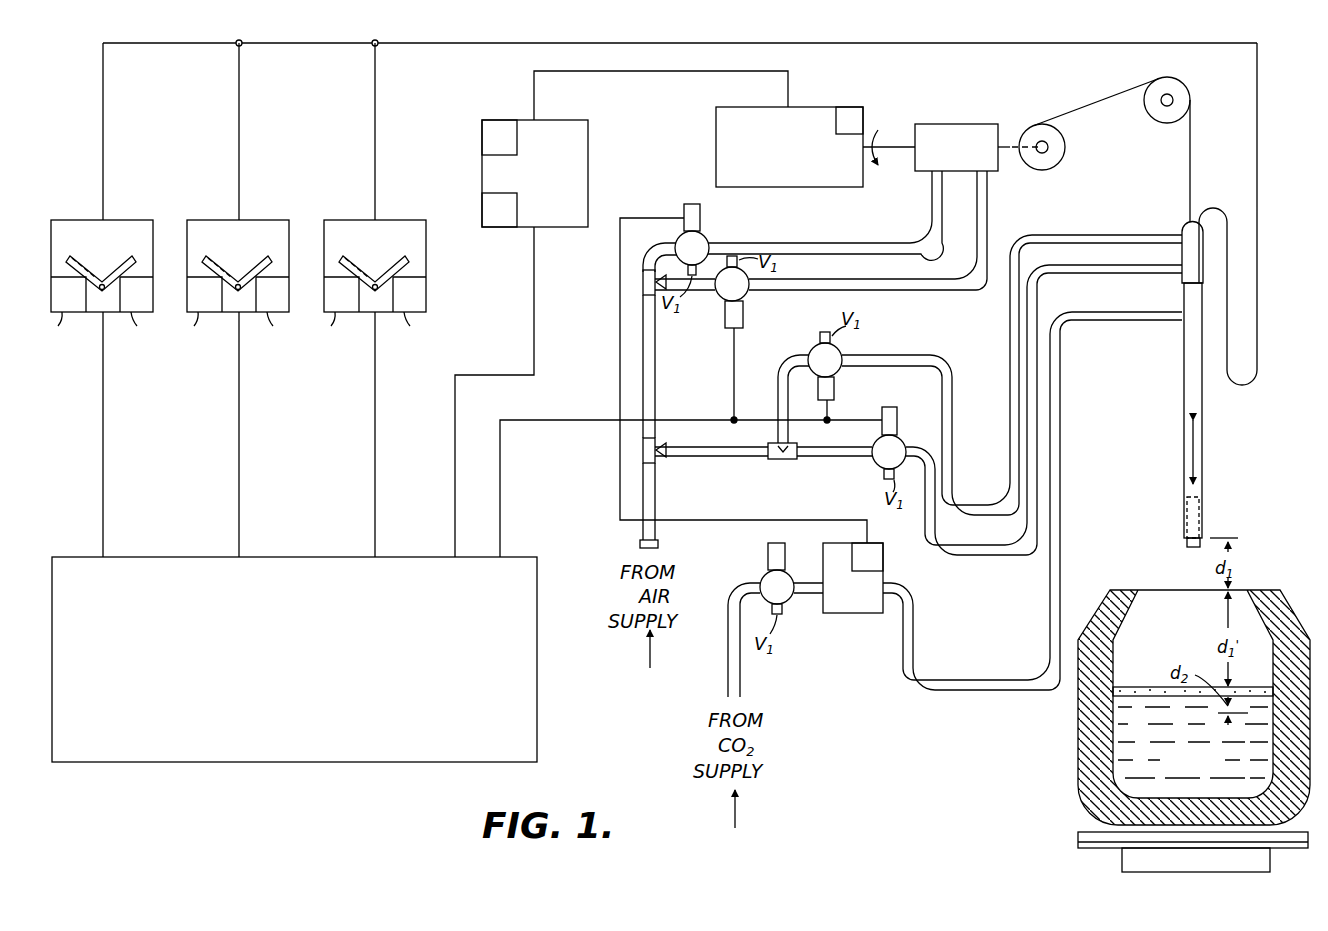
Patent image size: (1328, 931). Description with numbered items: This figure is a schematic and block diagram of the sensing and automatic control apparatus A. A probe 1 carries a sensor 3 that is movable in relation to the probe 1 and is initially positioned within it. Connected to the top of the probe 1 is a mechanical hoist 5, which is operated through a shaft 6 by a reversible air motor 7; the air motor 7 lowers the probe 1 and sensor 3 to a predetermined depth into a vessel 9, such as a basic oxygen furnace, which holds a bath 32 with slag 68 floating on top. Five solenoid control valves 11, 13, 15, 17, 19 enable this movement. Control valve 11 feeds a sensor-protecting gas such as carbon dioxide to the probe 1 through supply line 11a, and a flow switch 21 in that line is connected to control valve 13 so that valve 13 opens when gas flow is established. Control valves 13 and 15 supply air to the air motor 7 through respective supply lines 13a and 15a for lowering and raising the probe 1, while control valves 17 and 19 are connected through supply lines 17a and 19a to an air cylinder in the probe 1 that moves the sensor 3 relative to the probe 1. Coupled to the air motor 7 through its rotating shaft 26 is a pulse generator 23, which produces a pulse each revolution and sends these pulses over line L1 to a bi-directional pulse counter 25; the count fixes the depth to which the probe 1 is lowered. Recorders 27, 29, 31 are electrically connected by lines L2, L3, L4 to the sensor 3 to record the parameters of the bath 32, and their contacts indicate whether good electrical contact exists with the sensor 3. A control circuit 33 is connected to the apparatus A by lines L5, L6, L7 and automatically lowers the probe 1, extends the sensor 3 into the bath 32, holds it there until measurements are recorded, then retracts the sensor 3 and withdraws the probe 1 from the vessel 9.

The probe 1 is at (1209, 448).
The sensor 3 is at (1183, 544).
The mechanical hoist 5 is at (1100, 102).
The shaft 6 is at (1020, 140).
The reversible air motor 7 is at (969, 124).
The vessel 9 is at (1078, 745).
The control valve 11 is at (763, 576).
The supply line 11a is at (902, 661).
The control valve 13 is at (700, 218).
The supply line 13a is at (826, 243).
The control valve 15 is at (725, 320).
The supply line 15a is at (987, 212).
The control valve 17 is at (897, 412).
The supply line 17a is at (962, 557).
The control valve 19 is at (834, 388).
The supply line 19a is at (945, 341).
The flow switch 21 is at (848, 616).
The pulse generator 23 is at (826, 98).
The bi-directional pulse counter 25 is at (588, 150).
The rotating shaft 26 is at (880, 140).
The recorder 27 is at (409, 218).
The recorder 29 is at (272, 218).
The recorder 31 is at (136, 218).
The bath 32 is at (1198, 781).
The control circuit 33 is at (537, 700).
The slag 68 is at (1135, 685).
The line L1 is at (664, 70).
The line L2 is at (433, 46).
The line L3 is at (298, 46).
The line L4 is at (158, 46).
The line L5 is at (375, 417).
The line L6 is at (239, 417).
The line L7 is at (103, 417).
The apparatus A is at (802, 41).